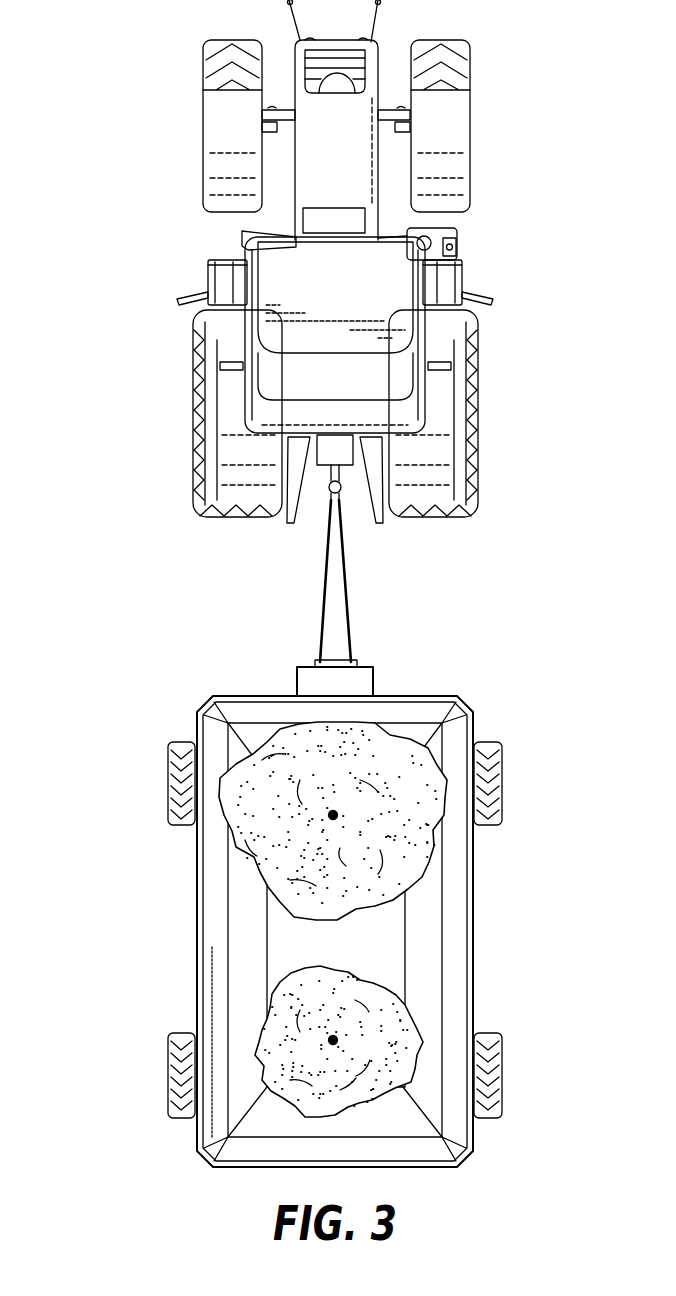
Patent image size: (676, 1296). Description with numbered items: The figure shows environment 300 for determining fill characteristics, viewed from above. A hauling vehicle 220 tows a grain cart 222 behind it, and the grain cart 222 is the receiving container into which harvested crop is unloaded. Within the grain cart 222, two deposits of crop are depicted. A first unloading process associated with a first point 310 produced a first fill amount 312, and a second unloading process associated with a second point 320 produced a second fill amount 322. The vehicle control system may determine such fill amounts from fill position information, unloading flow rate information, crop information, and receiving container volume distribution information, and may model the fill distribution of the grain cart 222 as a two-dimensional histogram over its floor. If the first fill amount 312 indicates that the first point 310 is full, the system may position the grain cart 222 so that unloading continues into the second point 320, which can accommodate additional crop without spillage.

The environment 300 is at (118, 190).
The hauling vehicle 220 is at (337, 147).
The grain cart 222 is at (430, 697).
The first point 310 is at (336, 813).
The first fill amount 312 is at (417, 883).
The second point 320 is at (336, 1040).
The second fill amount 322 is at (267, 1003).